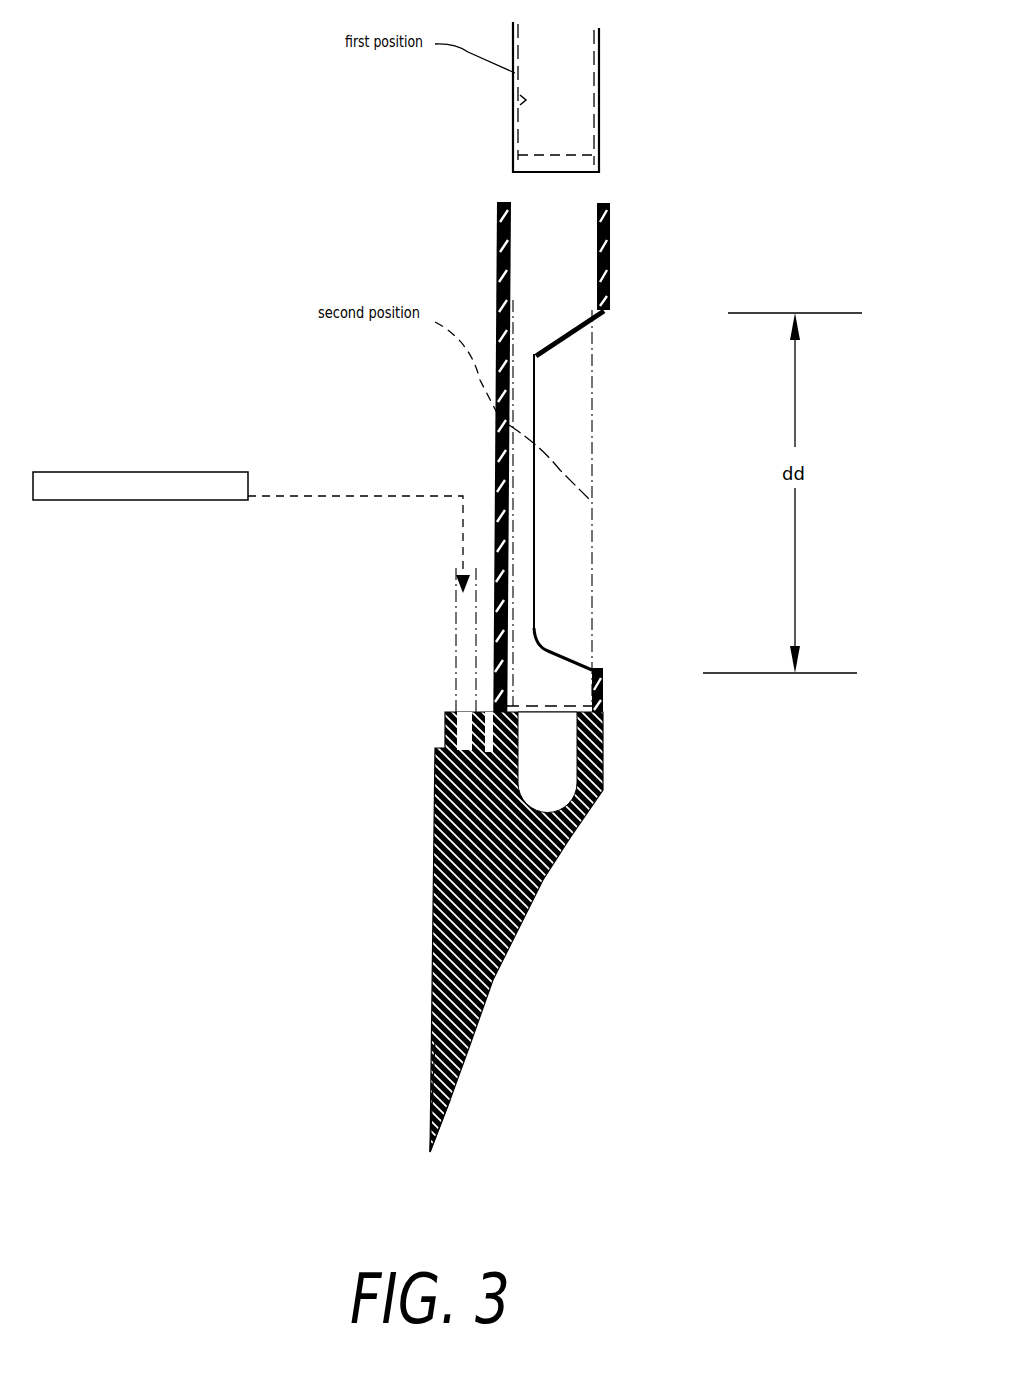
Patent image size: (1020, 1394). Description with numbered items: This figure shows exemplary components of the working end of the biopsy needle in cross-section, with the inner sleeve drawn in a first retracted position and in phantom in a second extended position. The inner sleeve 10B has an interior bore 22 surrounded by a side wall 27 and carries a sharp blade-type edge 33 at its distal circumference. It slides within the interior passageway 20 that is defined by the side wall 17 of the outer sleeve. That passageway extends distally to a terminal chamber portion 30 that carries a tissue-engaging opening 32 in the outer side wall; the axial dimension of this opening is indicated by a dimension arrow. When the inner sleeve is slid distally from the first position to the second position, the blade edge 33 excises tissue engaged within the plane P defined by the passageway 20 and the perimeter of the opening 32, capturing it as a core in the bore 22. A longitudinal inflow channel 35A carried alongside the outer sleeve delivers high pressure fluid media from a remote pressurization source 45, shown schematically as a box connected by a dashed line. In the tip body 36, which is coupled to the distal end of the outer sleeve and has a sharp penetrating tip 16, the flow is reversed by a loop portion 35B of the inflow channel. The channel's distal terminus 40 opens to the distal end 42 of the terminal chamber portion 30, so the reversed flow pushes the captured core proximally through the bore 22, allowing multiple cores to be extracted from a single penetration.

The second interior sleeve member 10B is at (600, 73).
The interior passageway or bore 22 is at (512, 97).
The side wall 27 is at (595, 108).
The blade-type edge 33 is at (588, 173).
The interior passageway 20 is at (578, 260).
The side wall 17 is at (610, 275).
The plane P is at (620, 303).
The terminal chamber portion 30 is at (553, 570).
The tissue-engaging opening 32 is at (573, 648).
The distal end 42 is at (552, 688).
The distal terminus 40 is at (553, 716).
The tip body 36 is at (553, 868).
The tip 16 is at (432, 1140).
The longitudinal inflow channel 35A is at (456, 608).
The loop portion 35B is at (478, 780).
The pressurization source 45 is at (251, 532).